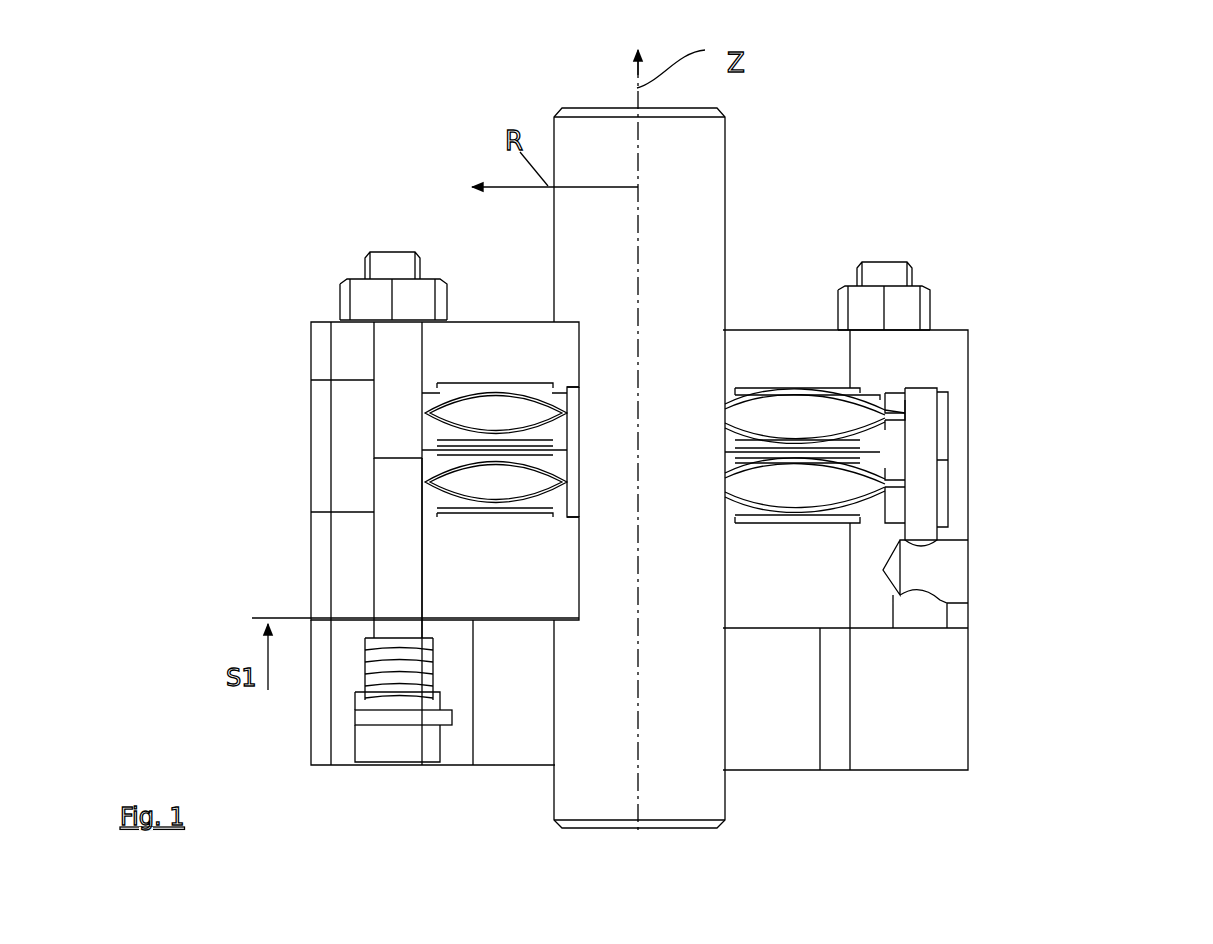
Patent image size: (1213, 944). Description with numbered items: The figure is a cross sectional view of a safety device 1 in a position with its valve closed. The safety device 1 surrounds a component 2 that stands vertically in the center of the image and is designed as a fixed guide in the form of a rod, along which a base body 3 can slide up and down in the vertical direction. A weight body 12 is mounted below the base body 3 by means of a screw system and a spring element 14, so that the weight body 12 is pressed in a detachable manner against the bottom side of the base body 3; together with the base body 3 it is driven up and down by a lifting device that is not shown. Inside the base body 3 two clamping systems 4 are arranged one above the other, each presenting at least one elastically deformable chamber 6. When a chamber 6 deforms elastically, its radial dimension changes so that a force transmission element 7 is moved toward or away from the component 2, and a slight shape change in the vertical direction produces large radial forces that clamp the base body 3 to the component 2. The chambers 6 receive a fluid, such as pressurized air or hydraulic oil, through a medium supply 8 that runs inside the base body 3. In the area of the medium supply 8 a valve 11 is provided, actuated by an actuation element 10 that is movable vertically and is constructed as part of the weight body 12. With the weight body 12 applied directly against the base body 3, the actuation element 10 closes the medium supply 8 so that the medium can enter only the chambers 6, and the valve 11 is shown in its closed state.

The safety device 1 is at (289, 334).
The component 2 is at (697, 203).
The base body 3 is at (944, 362).
The clamping system 4 is at (993, 490).
The elastically deformable chamber 6 is at (478, 495).
The force transmission element 7 is at (572, 453).
The medium supply 8 is at (953, 572).
The actuation element 10 is at (935, 720).
The valve 11 is at (923, 613).
The weight body 12 is at (894, 699).
The spring element 14 is at (397, 697).